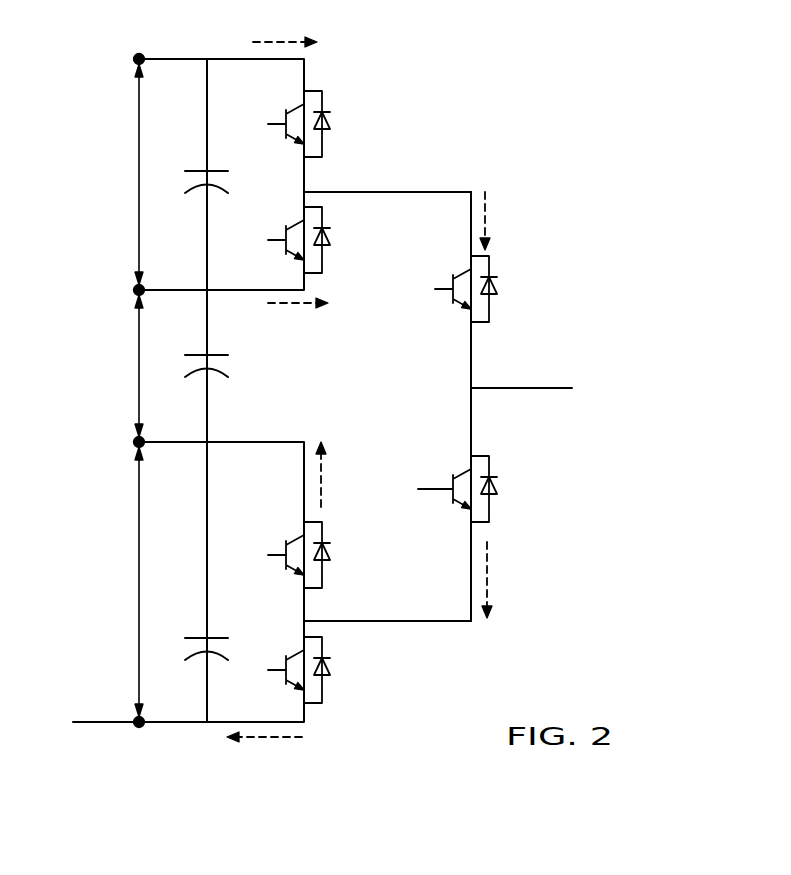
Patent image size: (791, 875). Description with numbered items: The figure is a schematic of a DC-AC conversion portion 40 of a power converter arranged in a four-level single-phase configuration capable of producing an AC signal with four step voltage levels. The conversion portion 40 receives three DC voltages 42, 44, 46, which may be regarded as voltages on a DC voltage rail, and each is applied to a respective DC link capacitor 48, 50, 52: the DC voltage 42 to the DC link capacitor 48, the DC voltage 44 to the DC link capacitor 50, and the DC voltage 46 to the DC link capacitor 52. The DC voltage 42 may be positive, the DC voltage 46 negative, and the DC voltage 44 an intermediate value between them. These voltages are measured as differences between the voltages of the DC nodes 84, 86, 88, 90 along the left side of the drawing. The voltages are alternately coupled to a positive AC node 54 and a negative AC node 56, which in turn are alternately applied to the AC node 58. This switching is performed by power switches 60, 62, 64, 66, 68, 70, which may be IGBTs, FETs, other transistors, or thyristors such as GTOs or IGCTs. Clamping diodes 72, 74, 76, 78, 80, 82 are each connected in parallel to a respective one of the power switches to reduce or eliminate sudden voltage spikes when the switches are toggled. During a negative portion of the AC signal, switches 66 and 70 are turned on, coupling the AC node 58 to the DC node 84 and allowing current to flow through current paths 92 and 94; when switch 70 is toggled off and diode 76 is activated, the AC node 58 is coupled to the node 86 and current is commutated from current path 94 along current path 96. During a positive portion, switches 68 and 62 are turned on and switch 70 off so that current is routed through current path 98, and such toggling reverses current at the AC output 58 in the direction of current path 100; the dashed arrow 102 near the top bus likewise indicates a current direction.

The DC-AC conversion portion 40 is at (524, 42).
The DC voltage 42 is at (139, 178).
The DC voltage 44 is at (139, 370).
The DC voltage 46 is at (139, 586).
The DC link capacitor 48 is at (198, 170).
The DC link capacitor 50 is at (198, 354).
The DC link capacitor 52 is at (198, 637).
The positive AC node 54 is at (440, 192).
The negative AC node 56 is at (437, 621).
The AC node 58 is at (520, 388).
The power switch 60 is at (285, 128).
The power switch 62 is at (285, 243).
The power switch 64 is at (285, 558).
The power switch 66 is at (285, 673).
The power switch 68 is at (452, 292).
The power switch 70 is at (452, 492).
The clamping diode 72 is at (330, 122).
The clamping diode 74 is at (330, 237).
The clamping diode 76 is at (330, 553).
The clamping diode 78 is at (330, 668).
The clamping diode 80 is at (497, 287).
The clamping diode 82 is at (497, 487).
The DC node 84 is at (139, 728).
The DC node 86 is at (136, 439).
The DC node 88 is at (136, 287).
The DC node 90 is at (136, 56).
The current path 92 is at (489, 575).
The current path 94 is at (270, 740).
The current path 96 is at (326, 475).
The current path 98 is at (486, 232).
The current path 100 is at (298, 304).
The positive bus current path 102 is at (276, 40).